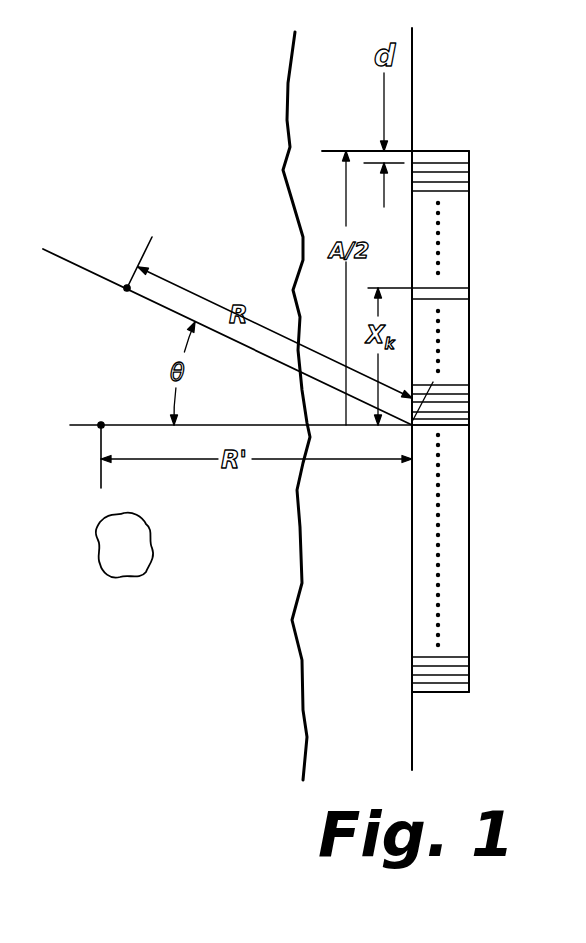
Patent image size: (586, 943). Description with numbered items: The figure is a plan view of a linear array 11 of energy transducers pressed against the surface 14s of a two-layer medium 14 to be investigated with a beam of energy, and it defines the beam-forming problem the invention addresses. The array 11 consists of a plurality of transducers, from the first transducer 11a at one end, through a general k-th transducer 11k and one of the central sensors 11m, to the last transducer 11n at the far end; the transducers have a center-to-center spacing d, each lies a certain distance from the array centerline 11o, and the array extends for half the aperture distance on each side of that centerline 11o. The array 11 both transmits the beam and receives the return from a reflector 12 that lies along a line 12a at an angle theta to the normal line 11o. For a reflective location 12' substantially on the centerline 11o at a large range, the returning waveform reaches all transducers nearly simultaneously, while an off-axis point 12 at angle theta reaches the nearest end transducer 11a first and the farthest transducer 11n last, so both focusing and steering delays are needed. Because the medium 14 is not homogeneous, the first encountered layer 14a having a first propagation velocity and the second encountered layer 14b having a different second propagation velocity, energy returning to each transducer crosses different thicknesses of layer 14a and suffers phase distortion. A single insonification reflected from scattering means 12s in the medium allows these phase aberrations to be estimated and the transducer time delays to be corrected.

The array of energy transducers 11 is at (438, 399).
The first transducer 11a is at (470, 157).
The k-th transducer 11k is at (470, 296).
The central sensor 11m is at (470, 418).
The last transducer 11n is at (470, 688).
The array centerline 11o is at (263, 424).
The reflector 12 is at (103, 280).
The line to reflector 12a is at (175, 313).
The reflective location on array midaxis 12' is at (76, 428).
The scattering means 12s is at (142, 542).
The medium 14 is at (237, 92).
The first encountered layer 14a is at (372, 614).
The second encountered layer 14b is at (249, 615).
The surface of medium 14s is at (412, 738).